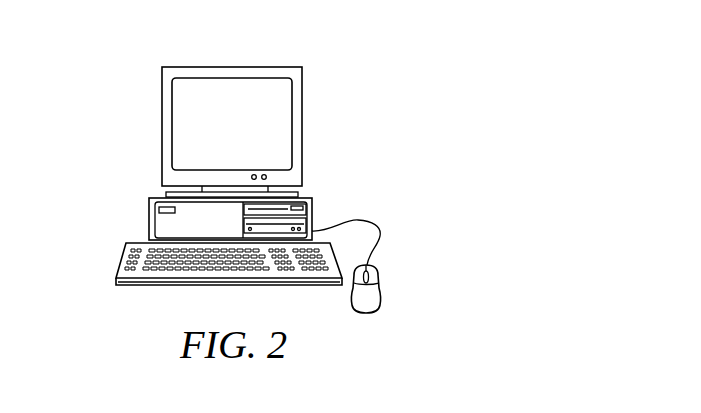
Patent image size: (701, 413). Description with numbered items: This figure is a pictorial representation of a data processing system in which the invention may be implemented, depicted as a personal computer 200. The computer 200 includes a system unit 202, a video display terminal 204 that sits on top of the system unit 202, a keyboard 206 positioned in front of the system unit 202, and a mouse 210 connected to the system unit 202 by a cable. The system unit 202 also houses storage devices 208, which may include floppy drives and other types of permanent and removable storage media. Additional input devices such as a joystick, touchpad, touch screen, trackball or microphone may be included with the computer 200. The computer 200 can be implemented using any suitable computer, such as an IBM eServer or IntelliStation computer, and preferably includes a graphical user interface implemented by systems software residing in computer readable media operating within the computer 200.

The computer 200 is at (99, 114).
The system unit 202 is at (149, 216).
The video display terminal 204 is at (302, 126).
The keyboard 206 is at (143, 285).
The storage devices 208 is at (282, 209).
The mouse 210 is at (367, 313).